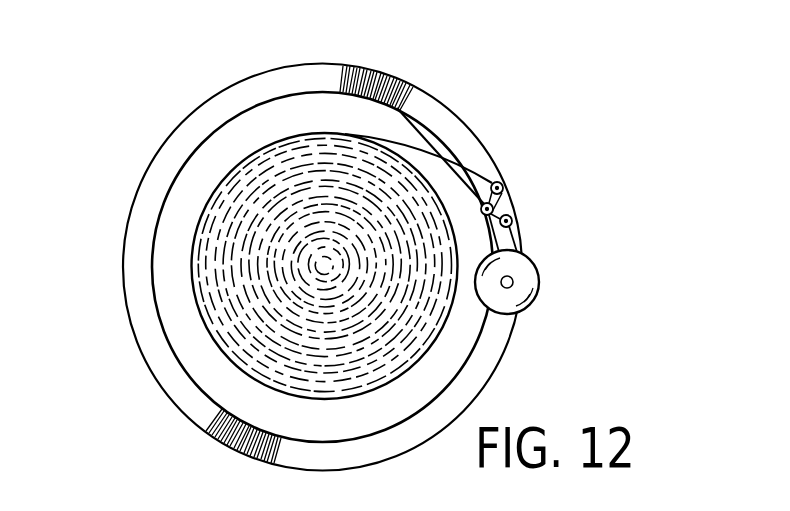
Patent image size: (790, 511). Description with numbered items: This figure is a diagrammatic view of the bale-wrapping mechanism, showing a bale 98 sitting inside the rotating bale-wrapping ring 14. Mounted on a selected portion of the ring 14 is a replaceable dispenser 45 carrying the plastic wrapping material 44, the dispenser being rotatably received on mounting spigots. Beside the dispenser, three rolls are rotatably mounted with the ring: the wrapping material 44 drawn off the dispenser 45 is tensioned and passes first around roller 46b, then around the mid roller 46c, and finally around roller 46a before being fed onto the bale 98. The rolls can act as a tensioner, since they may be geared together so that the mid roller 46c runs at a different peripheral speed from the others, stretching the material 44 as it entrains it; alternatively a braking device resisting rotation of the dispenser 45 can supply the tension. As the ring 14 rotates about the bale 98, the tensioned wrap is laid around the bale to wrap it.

The bale-wrapping ring 14 is at (272, 62).
The bale 98 is at (255, 195).
The wrapping material 44 is at (430, 145).
The roller 46a is at (503, 181).
The roller 46c is at (494, 205).
The roller 46b is at (513, 220).
The dispenser 45 is at (540, 282).